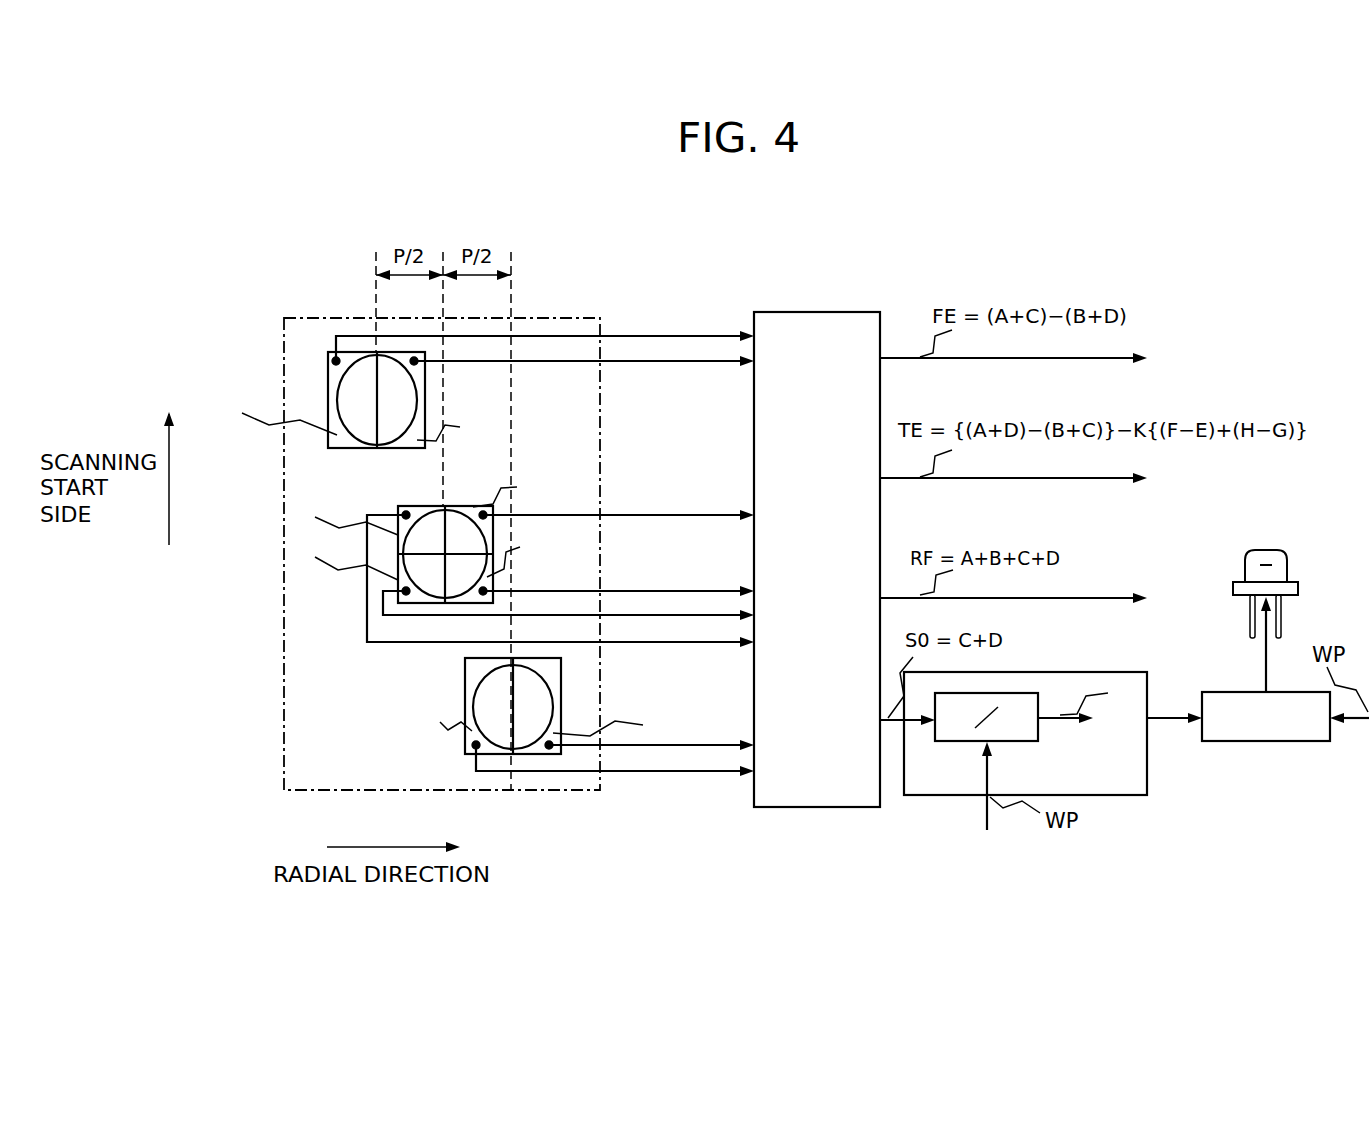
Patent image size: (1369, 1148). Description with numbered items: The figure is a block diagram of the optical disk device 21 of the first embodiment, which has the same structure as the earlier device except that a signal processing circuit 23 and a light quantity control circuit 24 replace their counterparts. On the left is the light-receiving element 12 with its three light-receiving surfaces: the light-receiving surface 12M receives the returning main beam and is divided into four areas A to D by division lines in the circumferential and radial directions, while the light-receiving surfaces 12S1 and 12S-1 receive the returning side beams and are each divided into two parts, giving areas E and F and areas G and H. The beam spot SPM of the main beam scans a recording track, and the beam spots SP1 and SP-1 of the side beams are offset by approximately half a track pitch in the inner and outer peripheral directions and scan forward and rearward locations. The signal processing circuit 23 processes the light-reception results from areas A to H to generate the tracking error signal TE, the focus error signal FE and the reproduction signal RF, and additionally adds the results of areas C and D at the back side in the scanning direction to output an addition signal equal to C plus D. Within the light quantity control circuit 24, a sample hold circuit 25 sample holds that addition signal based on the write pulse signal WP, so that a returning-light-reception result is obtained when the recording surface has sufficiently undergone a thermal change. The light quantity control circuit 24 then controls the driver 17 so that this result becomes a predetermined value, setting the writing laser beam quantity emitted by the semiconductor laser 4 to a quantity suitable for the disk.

The optical disk device 21 is at (182, 278).
The light-receiving element 12 is at (555, 315).
The light-receiving surface 12S1 is at (338, 372).
The light-receiving surface 12M is at (418, 507).
The light-receiving surface 12S-1 is at (550, 682).
The beam spot SP1 is at (360, 430).
The beam spot SPM is at (435, 577).
The beam spot SP-1 is at (522, 735).
The signal processing circuit 23 is at (798, 310).
The light quantity control circuit 24 is at (1020, 739).
The sample hold circuit 25 is at (970, 743).
The driver 17 is at (1265, 742).
The semiconductor laser 4 is at (1283, 565).